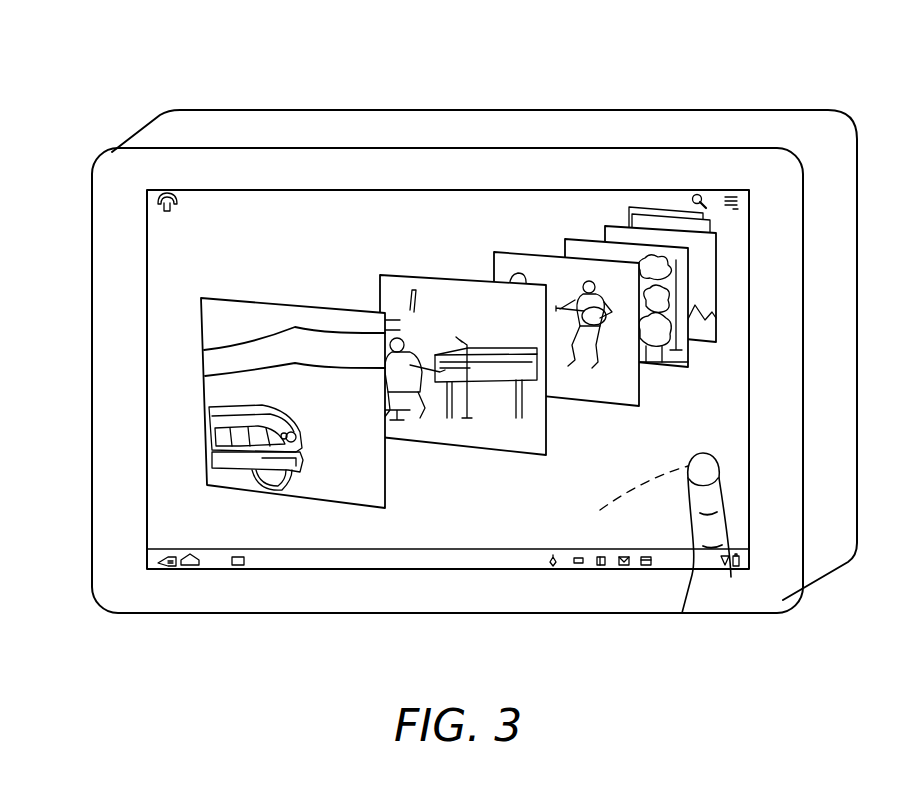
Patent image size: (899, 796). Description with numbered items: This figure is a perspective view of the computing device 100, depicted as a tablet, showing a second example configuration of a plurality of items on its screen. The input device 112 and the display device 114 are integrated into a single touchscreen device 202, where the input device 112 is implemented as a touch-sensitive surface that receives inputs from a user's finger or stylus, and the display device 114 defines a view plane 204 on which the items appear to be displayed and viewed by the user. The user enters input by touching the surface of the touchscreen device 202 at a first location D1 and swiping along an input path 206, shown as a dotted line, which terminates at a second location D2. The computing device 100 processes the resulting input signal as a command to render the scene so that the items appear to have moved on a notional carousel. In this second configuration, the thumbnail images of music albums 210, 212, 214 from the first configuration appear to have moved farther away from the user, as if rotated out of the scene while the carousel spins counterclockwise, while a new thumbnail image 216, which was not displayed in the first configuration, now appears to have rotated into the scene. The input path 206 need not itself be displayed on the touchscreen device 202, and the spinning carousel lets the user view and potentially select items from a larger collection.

The computing device 100 is at (158, 62).
The input device 112 is at (146, 250).
The display device 114 is at (198, 538).
The touchscreen device 202 is at (92, 379).
The view plane 204 is at (233, 239).
The input path 206 is at (658, 490).
The thumbnail image 210 is at (440, 275).
The thumbnail image 212 is at (518, 252).
The thumbnail image 214 is at (585, 239).
The new thumbnail image 216 is at (266, 299).
The first location D1 is at (627, 491).
The second location D2 is at (714, 447).